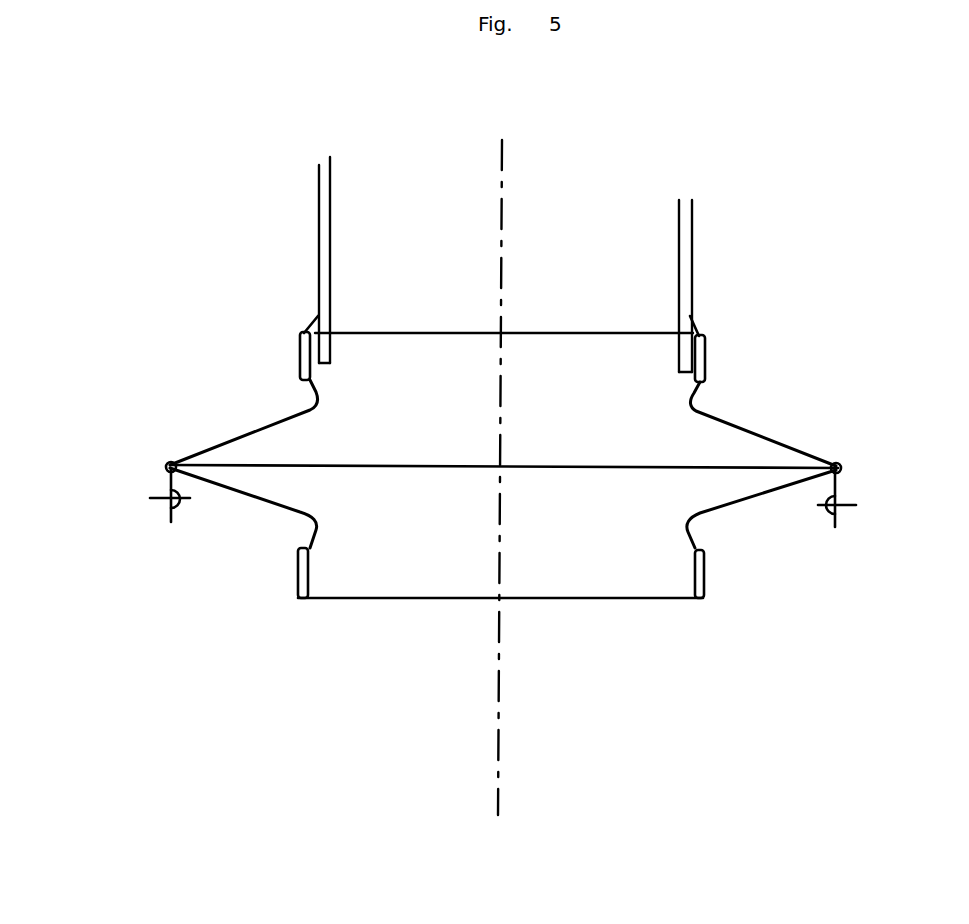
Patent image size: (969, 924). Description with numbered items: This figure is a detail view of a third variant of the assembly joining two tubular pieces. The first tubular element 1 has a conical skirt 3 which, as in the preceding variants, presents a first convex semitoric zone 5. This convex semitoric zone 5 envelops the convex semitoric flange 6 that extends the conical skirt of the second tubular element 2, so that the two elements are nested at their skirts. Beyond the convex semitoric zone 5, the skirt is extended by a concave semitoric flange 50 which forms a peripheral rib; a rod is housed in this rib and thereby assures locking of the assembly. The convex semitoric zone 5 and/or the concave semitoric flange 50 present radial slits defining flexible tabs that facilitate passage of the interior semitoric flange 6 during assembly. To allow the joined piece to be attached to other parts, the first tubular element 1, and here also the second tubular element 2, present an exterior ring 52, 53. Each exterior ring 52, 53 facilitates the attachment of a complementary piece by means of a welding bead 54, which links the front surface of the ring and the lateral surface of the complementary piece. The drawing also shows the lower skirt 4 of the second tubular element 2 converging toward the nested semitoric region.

The first tubular element 1 is at (252, 348).
The second tubular element 2 is at (708, 564).
The conical skirt 3 is at (212, 443).
The lower convolution wall 4 is at (272, 508).
The convex semitoric zone 5 is at (165, 467).
The convex semitoric flange 6 is at (176, 470).
The concave semitoric flange 50 is at (168, 512).
The exterior ring 52 is at (706, 365).
The exterior ring 53 is at (705, 580).
The welding bead 54 is at (312, 330).